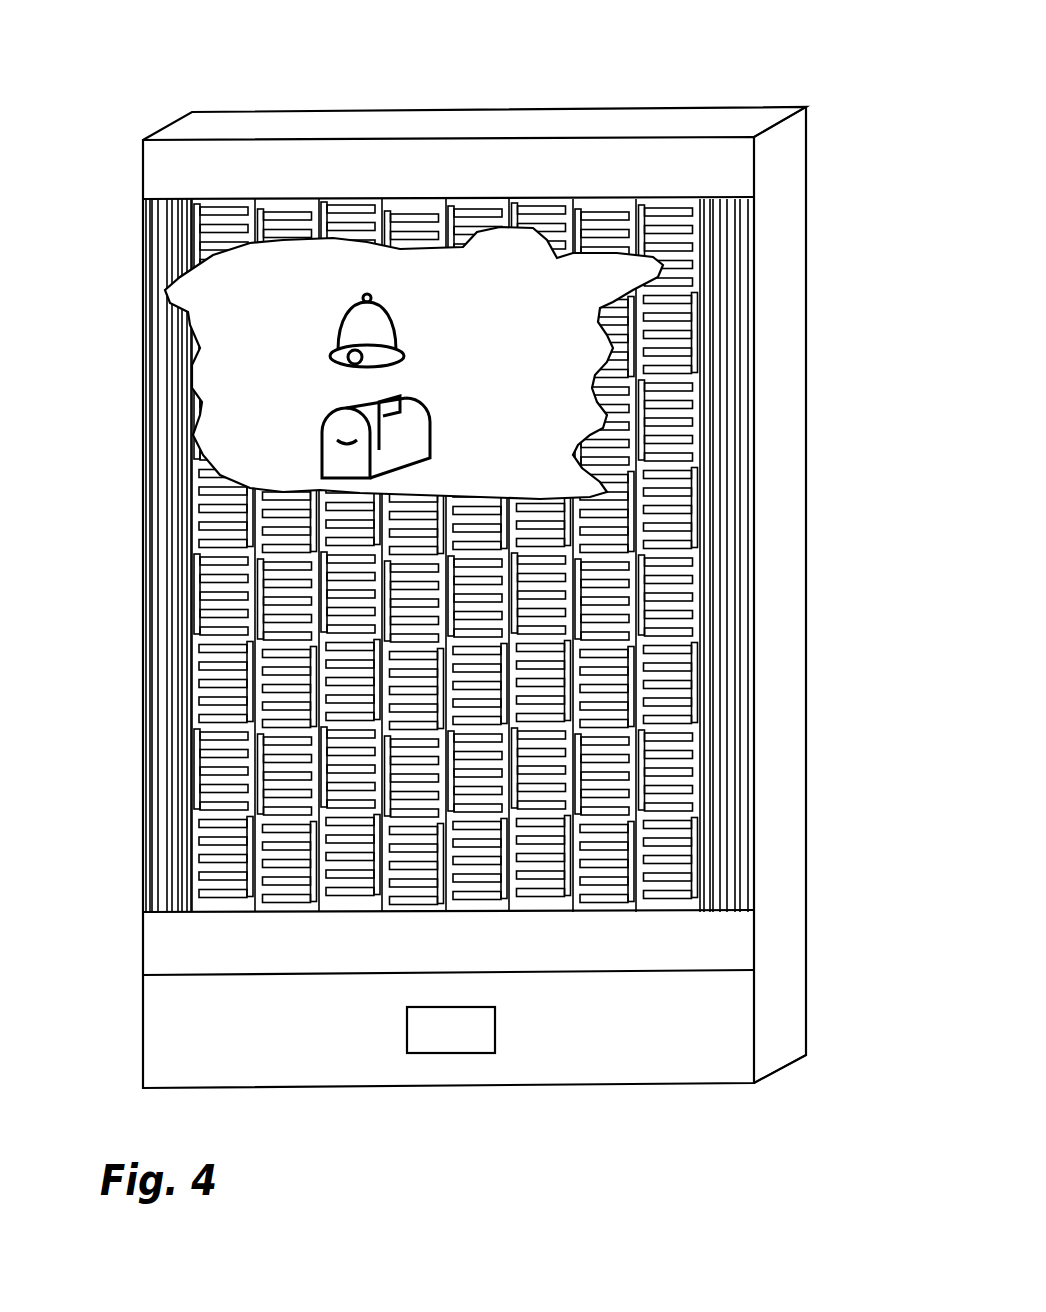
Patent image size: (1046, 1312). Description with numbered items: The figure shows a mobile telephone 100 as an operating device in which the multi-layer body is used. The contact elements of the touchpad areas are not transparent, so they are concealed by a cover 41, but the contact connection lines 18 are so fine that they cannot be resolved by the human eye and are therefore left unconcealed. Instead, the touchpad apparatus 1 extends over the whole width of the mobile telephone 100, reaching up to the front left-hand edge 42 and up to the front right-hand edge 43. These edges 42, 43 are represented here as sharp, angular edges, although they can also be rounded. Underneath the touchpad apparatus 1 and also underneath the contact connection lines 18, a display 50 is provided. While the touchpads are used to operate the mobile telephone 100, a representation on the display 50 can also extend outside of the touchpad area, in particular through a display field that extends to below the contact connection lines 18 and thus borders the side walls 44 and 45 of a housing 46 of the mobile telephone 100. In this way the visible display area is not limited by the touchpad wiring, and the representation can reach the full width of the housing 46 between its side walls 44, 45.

The mobile telephone 100 is at (772, 63).
The cover 41 is at (461, 162).
The display 50 is at (545, 250).
The front left-hand edge 42 is at (136, 283).
The front right-hand edge 43 is at (762, 270).
The side wall 44 is at (133, 350).
The side wall 45 is at (785, 400).
The contact connection lines 18 is at (145, 439).
The touchpad apparatus 1 is at (680, 567).
The housing 46 is at (690, 1067).